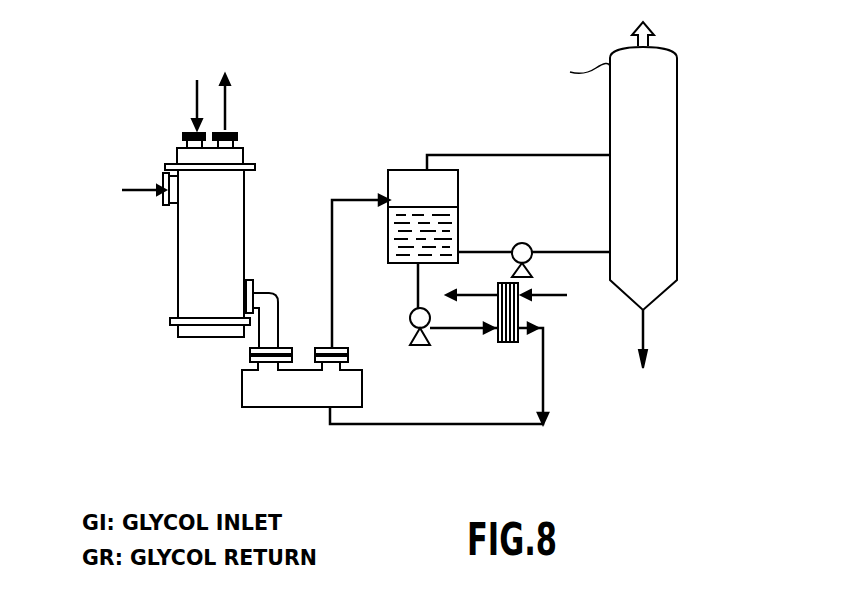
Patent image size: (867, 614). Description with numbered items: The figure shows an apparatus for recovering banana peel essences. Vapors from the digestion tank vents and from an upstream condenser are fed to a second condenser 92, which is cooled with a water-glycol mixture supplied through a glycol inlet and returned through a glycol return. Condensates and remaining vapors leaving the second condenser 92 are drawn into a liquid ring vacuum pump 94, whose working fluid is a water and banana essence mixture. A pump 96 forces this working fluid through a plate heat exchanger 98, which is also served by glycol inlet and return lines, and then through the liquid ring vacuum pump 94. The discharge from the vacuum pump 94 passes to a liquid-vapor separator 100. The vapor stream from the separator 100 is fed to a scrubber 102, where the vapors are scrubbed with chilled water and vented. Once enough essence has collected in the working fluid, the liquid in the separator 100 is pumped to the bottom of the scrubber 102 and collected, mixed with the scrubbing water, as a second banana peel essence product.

The second condenser 92 is at (155, 295).
The liquid ring vacuum pump 94 is at (222, 412).
The pump 96 is at (435, 334).
The plate heat exchanger 98 is at (508, 352).
The liquid-vapor separator 100 is at (405, 160).
The scrubber 102 is at (668, 167).